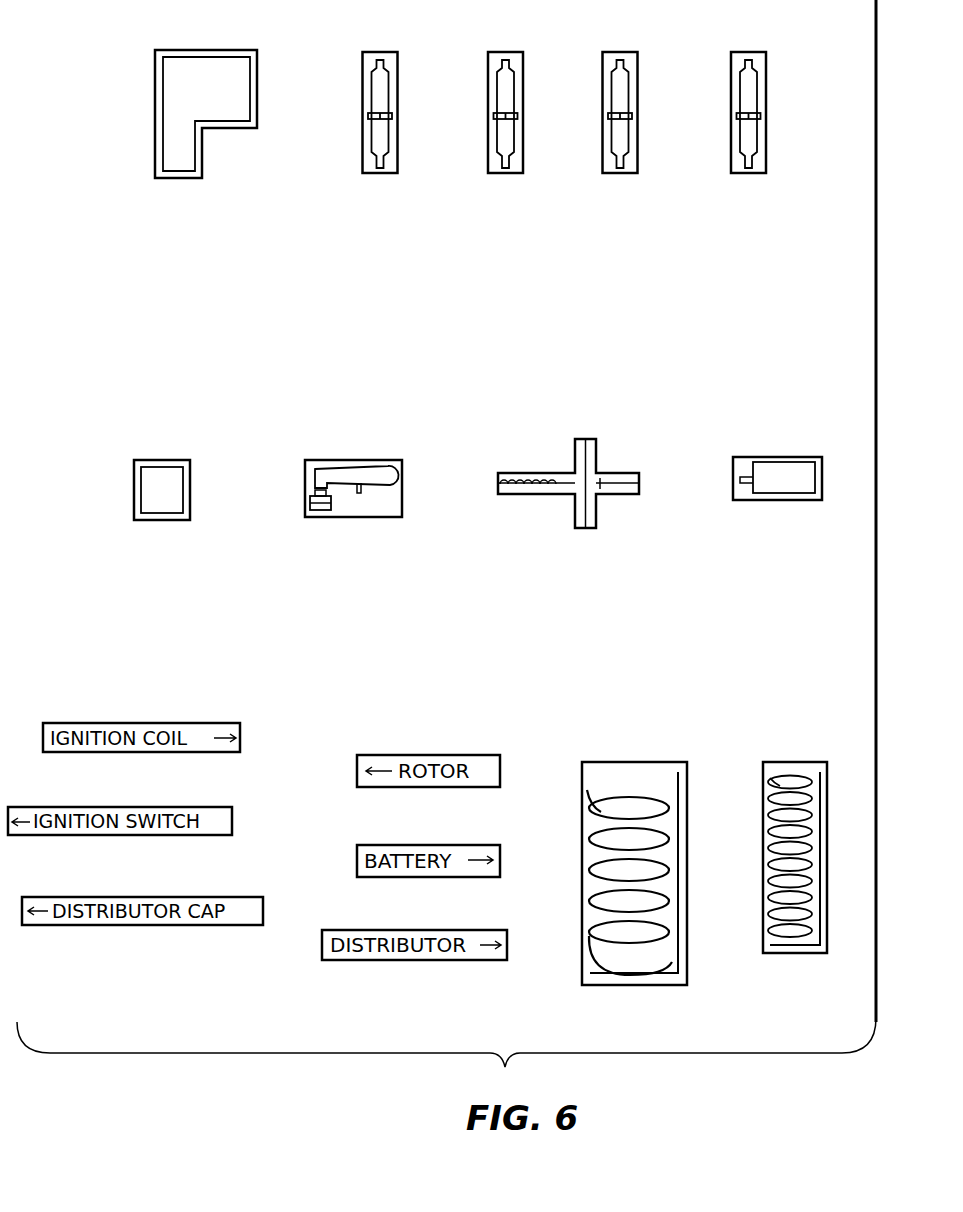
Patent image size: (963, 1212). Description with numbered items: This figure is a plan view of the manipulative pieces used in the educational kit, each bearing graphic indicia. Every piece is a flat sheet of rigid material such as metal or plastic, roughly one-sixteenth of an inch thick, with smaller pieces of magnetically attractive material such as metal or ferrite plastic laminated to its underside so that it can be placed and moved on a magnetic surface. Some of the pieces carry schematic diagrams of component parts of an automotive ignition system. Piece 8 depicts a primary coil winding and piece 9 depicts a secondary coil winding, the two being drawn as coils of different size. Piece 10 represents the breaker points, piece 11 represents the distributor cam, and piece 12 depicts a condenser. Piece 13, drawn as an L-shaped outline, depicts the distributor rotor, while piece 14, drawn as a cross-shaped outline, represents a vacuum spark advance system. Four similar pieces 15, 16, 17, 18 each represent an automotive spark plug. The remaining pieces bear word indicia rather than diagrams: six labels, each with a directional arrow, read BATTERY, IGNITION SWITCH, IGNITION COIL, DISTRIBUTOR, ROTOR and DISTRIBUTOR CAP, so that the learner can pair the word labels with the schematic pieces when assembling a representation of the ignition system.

The piece depicting primary coil winding 8 is at (617, 766).
The piece depicting secondary coil winding 9 is at (783, 768).
The piece representing breaker points 10 is at (386, 468).
The piece representing distributor cam 11 is at (172, 478).
The piece depicting condenser 12 is at (762, 468).
The piece depicting distributor rotor 13 is at (236, 60).
The piece representing vacuum spark advance system 14 is at (600, 476).
The piece representing automotive spark plug 15 is at (386, 55).
The piece representing automotive spark plug 16 is at (512, 55).
The piece representing automotive spark plug 17 is at (624, 56).
The piece representing automotive spark plug 18 is at (752, 60).